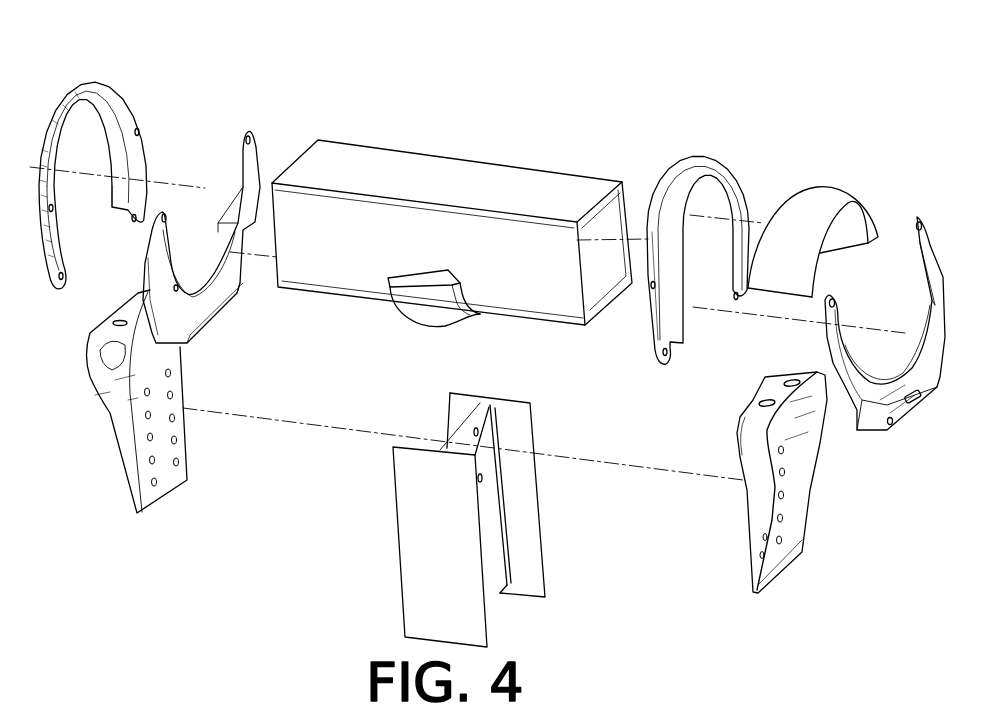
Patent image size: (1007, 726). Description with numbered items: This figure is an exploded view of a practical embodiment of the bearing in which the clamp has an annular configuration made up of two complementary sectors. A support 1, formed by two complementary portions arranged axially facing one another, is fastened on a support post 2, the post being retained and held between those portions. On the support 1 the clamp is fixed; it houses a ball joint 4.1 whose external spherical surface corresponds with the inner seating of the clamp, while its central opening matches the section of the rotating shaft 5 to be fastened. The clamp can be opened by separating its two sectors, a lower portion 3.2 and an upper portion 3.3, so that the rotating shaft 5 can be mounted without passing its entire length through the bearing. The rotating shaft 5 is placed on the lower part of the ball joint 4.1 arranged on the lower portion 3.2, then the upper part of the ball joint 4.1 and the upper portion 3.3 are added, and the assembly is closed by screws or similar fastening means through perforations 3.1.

The support 1 is at (117, 413).
The support post 2 is at (433, 508).
The perforations 3.1 is at (48, 257).
The lower portion of the clamp 3.2 is at (252, 168).
The upper portion of the clamp 3.3 is at (138, 140).
The ball joint 4.1 is at (420, 307).
The rotating shaft 5 is at (383, 172).